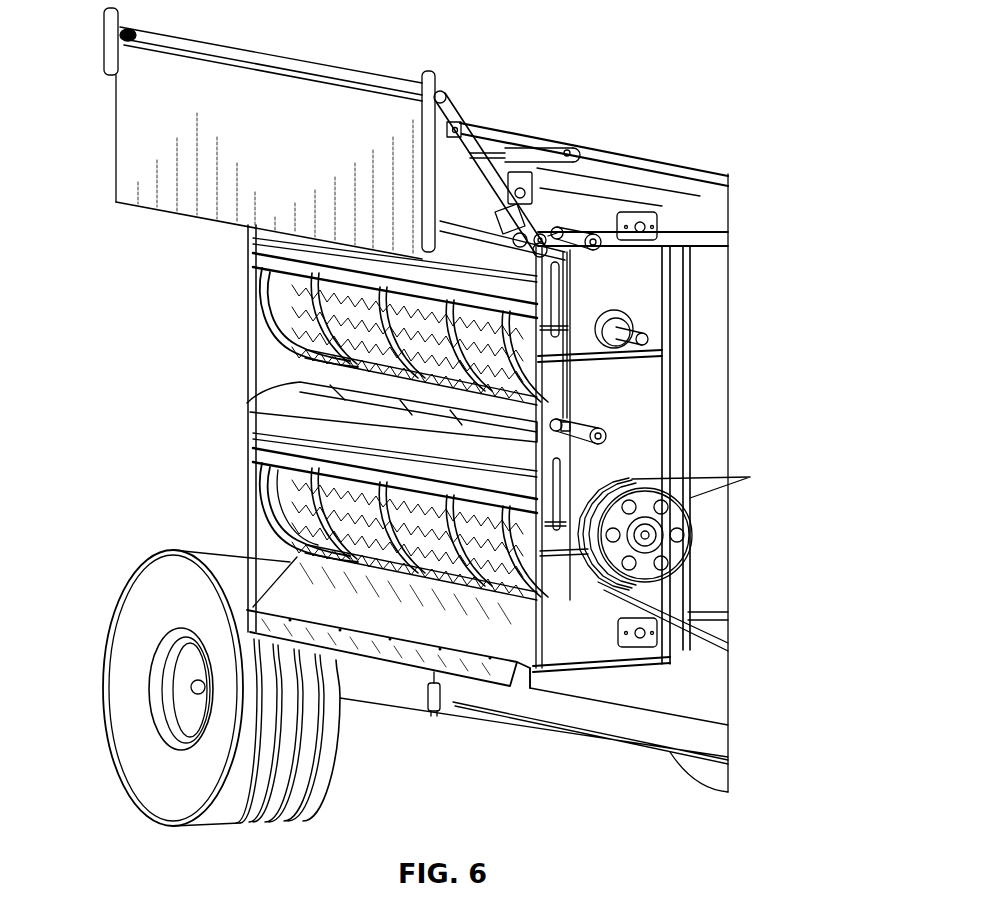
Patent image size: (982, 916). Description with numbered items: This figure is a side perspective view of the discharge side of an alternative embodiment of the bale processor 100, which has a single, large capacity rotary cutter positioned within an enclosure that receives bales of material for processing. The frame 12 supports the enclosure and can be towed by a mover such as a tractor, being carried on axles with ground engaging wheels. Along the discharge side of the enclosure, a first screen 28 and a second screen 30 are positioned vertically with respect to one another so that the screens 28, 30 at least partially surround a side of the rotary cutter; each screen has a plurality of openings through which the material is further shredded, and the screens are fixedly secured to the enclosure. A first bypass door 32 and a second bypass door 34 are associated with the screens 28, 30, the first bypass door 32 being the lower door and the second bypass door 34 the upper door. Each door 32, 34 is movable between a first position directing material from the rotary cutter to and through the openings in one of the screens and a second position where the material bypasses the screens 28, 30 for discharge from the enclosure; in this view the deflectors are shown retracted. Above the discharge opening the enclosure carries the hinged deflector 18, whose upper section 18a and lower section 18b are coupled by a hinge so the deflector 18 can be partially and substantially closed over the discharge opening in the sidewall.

The bale processor 100 is at (727, 82).
The frame 12 is at (290, 520).
The deflector 18 is at (296, 133).
The upper section 18a is at (443, 102).
The lower section 18b is at (147, 192).
The first screen 28 is at (365, 516).
The second screen 30 is at (278, 302).
The first bypass door 32 is at (278, 398).
The second bypass door 34 is at (481, 250).